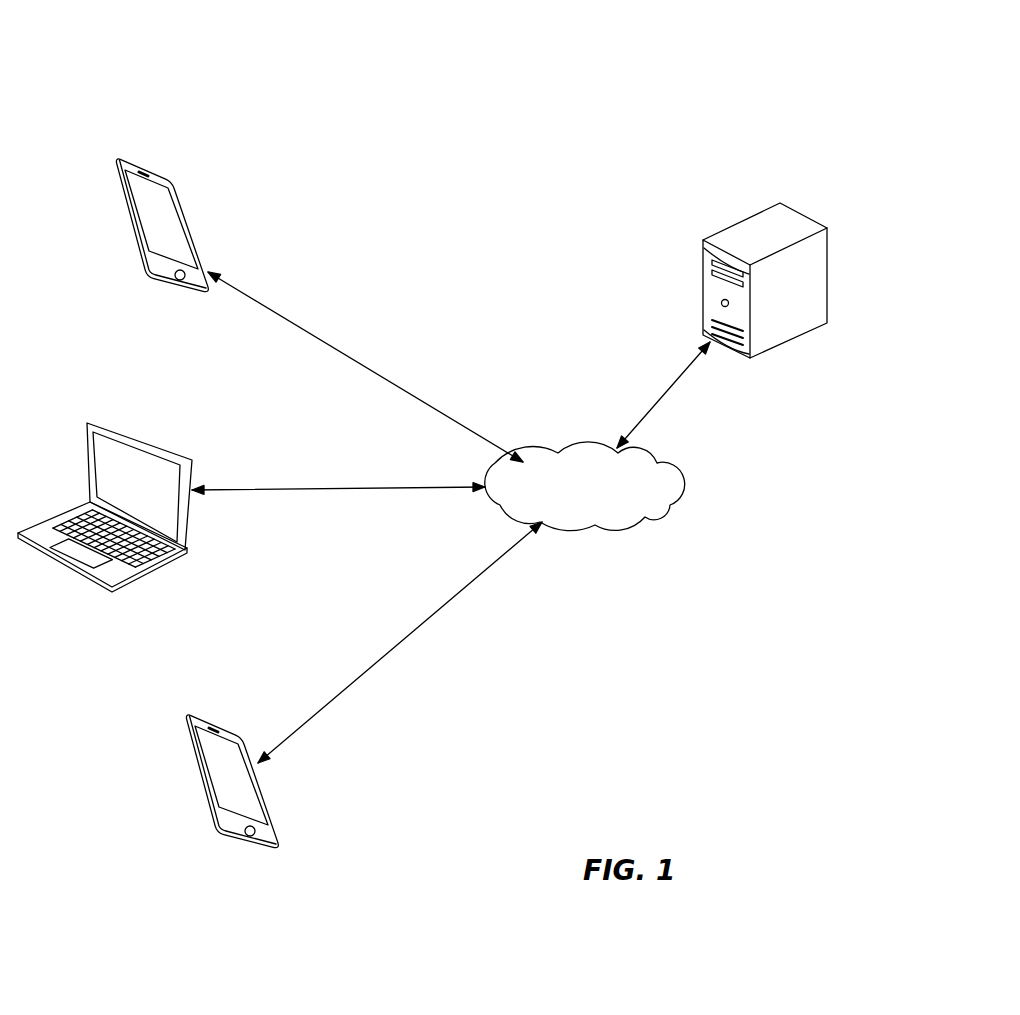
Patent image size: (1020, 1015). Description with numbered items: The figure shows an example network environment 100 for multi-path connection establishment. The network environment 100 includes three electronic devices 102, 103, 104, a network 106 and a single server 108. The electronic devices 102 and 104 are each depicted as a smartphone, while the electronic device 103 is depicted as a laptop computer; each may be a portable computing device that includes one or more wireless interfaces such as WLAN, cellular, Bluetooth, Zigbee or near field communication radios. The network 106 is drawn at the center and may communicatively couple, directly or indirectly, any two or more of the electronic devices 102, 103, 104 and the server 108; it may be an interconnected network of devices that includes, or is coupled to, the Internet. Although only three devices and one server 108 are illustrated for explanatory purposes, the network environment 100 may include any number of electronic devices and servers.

The network environment 100 is at (180, 72).
The electronic device 102 is at (228, 840).
The electronic device 103 is at (107, 588).
The electronic device 104 is at (172, 292).
The network 106 is at (617, 527).
The server 108 is at (717, 233).